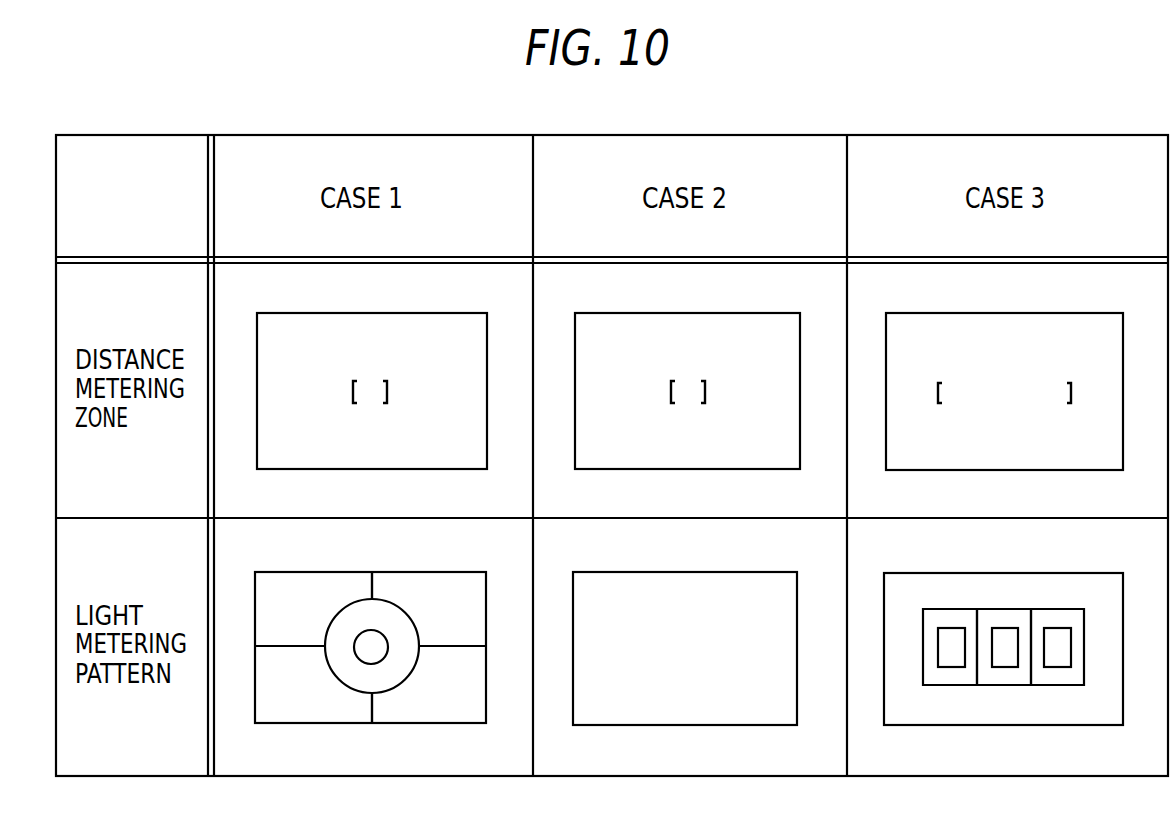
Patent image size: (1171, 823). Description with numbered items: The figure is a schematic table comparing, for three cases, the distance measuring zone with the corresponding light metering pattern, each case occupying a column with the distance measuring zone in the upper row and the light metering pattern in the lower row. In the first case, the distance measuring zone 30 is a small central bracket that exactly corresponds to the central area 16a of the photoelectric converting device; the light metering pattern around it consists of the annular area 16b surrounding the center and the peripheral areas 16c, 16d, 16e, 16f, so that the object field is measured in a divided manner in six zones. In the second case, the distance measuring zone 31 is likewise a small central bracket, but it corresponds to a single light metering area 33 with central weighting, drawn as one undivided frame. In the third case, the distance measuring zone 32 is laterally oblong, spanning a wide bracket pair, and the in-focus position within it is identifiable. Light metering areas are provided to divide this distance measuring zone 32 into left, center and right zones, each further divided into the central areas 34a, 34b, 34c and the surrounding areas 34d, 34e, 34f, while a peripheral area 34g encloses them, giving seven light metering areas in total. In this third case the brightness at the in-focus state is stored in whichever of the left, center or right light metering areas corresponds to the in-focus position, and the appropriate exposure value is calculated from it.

The distance measuring zone 30 is at (372, 387).
The distance measuring zone 31 is at (690, 387).
The distance measuring zone 32 is at (1010, 378).
The light metering area 33 is at (766, 587).
The central area 16a is at (375, 645).
The annular area 16b is at (348, 617).
The peripheral area 16c is at (275, 587).
The peripheral area 16d is at (463, 590).
The peripheral area 16e is at (302, 703).
The peripheral area 16f is at (412, 703).
The central area 34a is at (1008, 658).
The central area 34b is at (955, 660).
The central area 34c is at (1060, 658).
The surrounding area 34d is at (1003, 618).
The surrounding area 34e is at (941, 618).
The surrounding area 34f is at (1052, 620).
The peripheral area 34g is at (1106, 588).